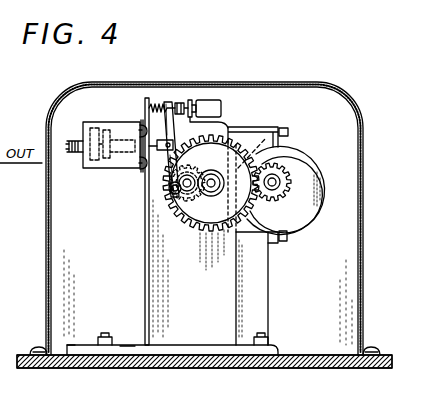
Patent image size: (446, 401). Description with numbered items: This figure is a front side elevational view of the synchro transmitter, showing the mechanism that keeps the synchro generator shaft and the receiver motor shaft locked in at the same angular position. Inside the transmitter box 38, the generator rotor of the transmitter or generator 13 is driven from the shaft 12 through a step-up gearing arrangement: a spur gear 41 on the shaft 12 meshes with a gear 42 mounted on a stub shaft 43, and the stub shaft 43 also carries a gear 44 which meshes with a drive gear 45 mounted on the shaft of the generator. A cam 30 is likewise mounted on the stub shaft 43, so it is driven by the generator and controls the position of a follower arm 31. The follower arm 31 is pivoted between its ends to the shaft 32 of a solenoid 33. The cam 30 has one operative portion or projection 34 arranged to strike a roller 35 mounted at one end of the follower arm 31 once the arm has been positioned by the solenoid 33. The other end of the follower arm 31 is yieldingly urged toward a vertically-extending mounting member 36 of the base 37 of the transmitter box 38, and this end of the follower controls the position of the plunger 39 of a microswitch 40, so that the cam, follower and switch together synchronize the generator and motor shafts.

The shaft 12 is at (185, 203).
The transmitter or generator 13 is at (308, 191).
The cam 30 is at (248, 132).
The follower arm 31 is at (160, 150).
The shaft of solenoid 32 is at (143, 166).
The solenoid 33 is at (111, 124).
The operative portion or projection 34 is at (170, 168).
The roller 35 is at (170, 190).
The vertically-extending mounting member 36 is at (145, 248).
The base 37 is at (122, 347).
The transmitter box 38 is at (46, 270).
The plunger 39 is at (182, 101).
The microswitch 40 is at (210, 103).
The spur gear 41 is at (180, 222).
The gear 42 is at (284, 128).
The stub shaft 43 is at (234, 178).
The gear 44 is at (207, 235).
The drive gear 45 is at (283, 168).